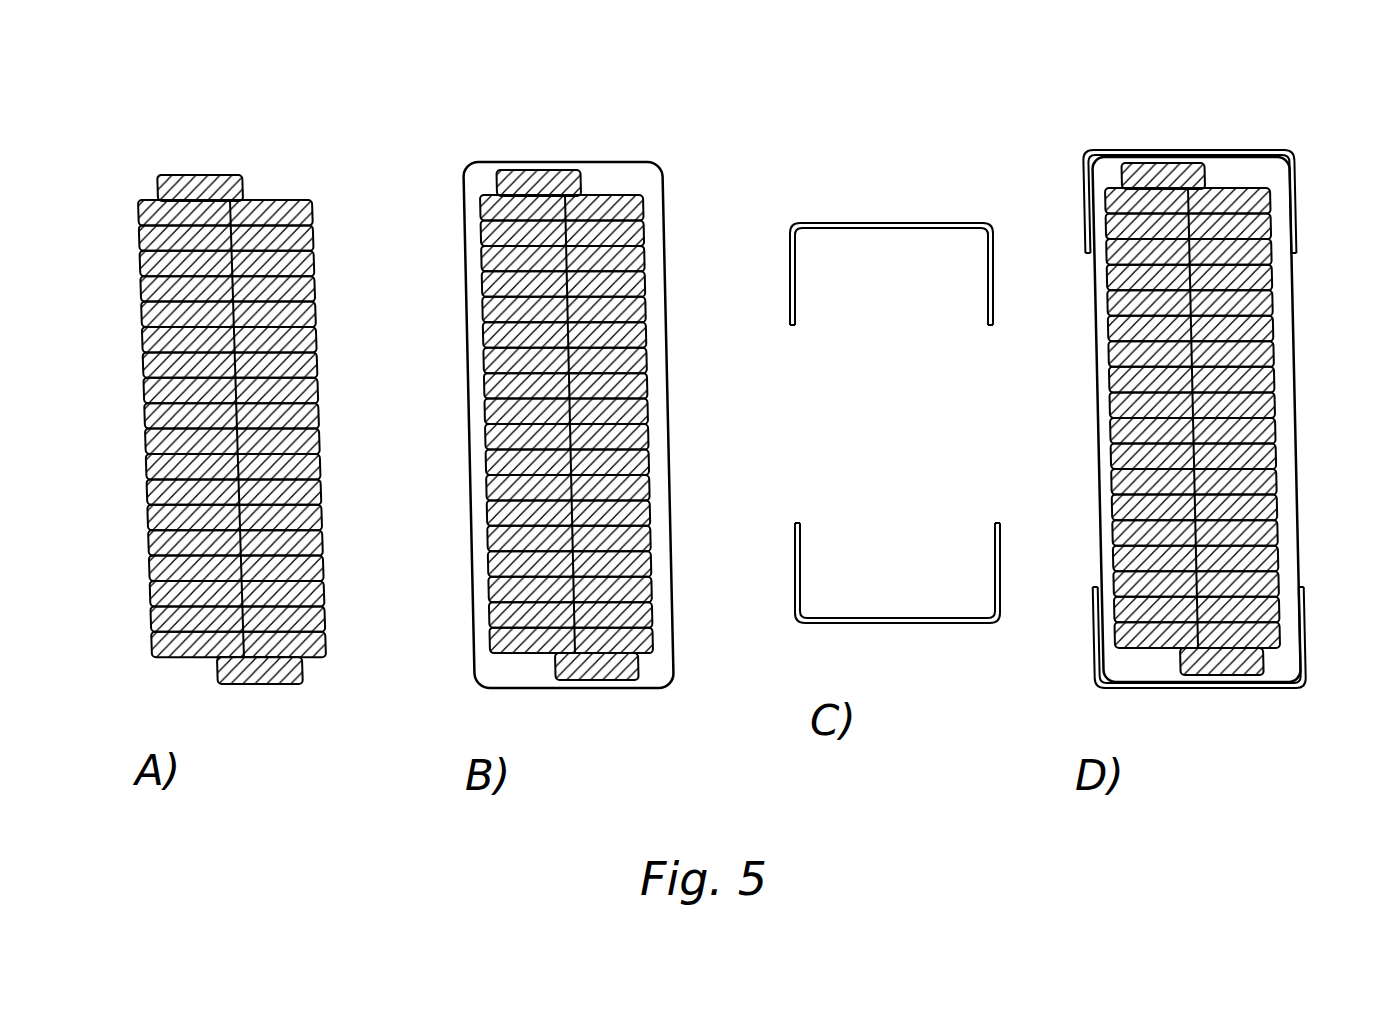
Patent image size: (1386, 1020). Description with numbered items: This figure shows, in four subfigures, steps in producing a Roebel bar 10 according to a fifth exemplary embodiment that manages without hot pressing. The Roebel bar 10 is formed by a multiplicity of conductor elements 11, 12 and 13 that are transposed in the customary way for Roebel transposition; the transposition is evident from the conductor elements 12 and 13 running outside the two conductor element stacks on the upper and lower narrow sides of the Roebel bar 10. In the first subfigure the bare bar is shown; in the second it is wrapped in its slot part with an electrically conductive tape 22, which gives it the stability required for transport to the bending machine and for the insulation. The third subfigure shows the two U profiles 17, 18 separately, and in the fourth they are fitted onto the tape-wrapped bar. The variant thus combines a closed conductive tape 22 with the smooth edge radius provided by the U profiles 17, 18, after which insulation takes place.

The Roebel bar 10 is at (250, 145).
The conductor elements 11 is at (316, 420).
The conductor element 12 is at (198, 178).
The conductor element 13 is at (255, 685).
The U profile 17 is at (895, 223).
The U profile 18 is at (940, 623).
The electrically conductive tape 22 is at (642, 178).